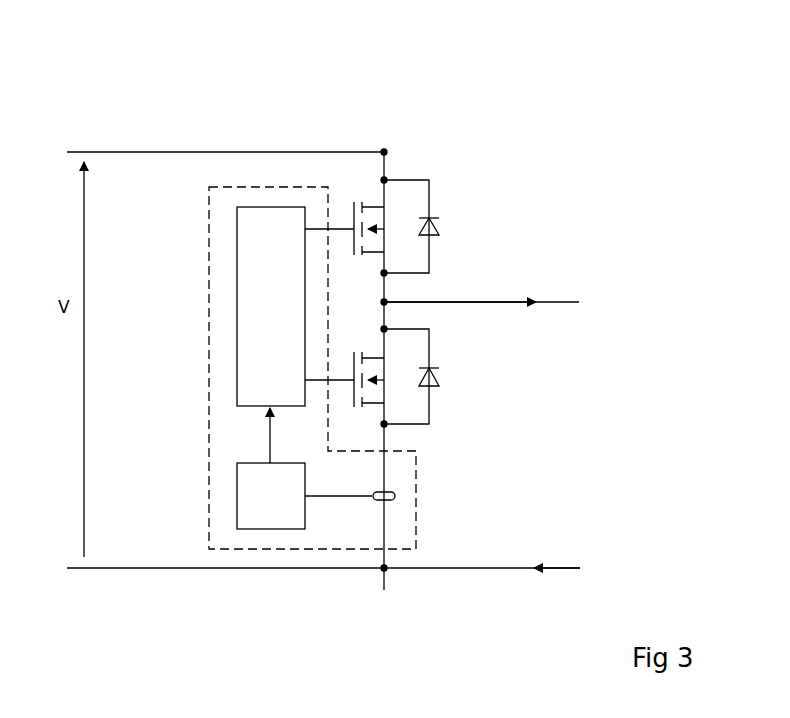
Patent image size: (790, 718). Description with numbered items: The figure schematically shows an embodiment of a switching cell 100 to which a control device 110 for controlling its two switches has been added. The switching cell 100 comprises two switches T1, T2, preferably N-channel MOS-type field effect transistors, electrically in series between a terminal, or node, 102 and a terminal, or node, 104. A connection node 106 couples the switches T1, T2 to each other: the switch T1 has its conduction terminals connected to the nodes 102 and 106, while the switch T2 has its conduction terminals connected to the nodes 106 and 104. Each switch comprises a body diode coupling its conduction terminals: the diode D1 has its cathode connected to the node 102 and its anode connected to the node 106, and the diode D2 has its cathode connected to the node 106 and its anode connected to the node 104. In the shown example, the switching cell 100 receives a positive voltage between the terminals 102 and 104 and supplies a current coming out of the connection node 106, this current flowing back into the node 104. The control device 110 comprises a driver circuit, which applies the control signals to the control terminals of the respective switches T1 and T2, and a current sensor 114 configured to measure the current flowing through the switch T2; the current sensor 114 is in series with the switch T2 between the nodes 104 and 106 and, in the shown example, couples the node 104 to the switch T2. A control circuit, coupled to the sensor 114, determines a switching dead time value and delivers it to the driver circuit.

The switching cell 100 is at (406, 88).
The terminal (node) 102 is at (386, 152).
The terminal (node) 104 is at (385, 571).
The connection node 106 is at (386, 301).
The control device 110 is at (207, 366).
The current sensor 114 is at (396, 497).
The switch T1 is at (464, 204).
The diode D1 is at (440, 225).
The switch T2 is at (448, 406).
The diode D2 is at (440, 375).